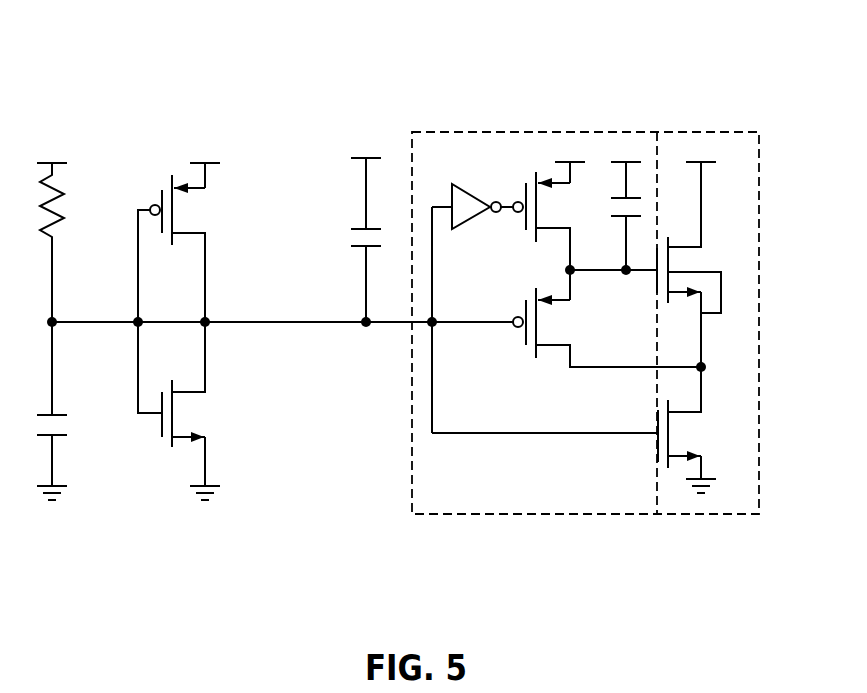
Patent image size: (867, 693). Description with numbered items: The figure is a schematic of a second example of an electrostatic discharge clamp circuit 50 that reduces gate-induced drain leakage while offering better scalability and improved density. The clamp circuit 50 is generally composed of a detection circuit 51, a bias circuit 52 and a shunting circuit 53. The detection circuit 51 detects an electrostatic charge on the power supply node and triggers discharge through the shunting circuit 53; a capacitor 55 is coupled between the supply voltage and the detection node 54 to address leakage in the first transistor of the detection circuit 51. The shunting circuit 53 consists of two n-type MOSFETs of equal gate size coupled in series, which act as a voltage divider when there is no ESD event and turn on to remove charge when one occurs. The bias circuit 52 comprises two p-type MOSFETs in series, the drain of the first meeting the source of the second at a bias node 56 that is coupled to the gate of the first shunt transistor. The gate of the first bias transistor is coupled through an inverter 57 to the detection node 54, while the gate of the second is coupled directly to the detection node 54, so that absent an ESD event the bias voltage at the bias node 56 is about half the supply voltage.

The clamp circuit 50 is at (226, 107).
The detection circuit 51 is at (124, 537).
The bias circuit 52 is at (411, 427).
The shunting circuit 53 is at (760, 210).
The detection node 54 is at (208, 326).
The capacitor 55 is at (360, 228).
The bias node 56 is at (573, 273).
The inverter 57 is at (470, 218).